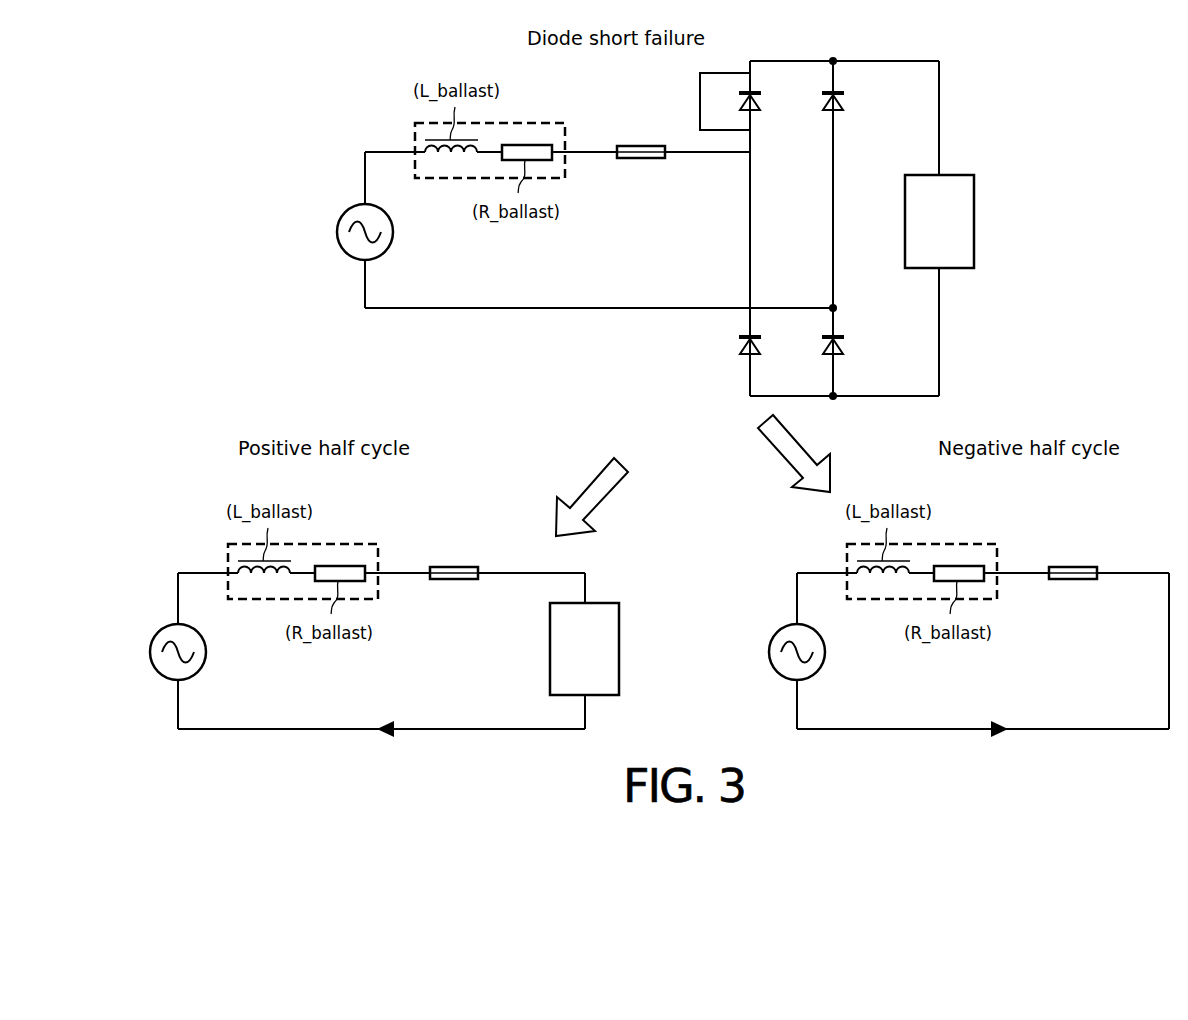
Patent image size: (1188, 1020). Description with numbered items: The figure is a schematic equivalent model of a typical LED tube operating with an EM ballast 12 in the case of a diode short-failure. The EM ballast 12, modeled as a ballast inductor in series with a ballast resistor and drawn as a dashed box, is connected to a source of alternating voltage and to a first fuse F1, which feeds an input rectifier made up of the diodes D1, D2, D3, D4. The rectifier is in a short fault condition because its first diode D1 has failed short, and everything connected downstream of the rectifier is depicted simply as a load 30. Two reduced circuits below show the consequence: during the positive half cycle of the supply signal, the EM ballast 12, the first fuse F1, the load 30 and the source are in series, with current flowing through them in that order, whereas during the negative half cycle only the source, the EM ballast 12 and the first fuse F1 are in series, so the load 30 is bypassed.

The EM ballast 12 is at (542, 122).
The load 30 is at (968, 187).
The first fuse F1 is at (763, 365).
The first diode D1 is at (734, 102).
The diode D2 is at (817, 102).
The diode D3 is at (734, 345).
The diode D4 is at (817, 345).